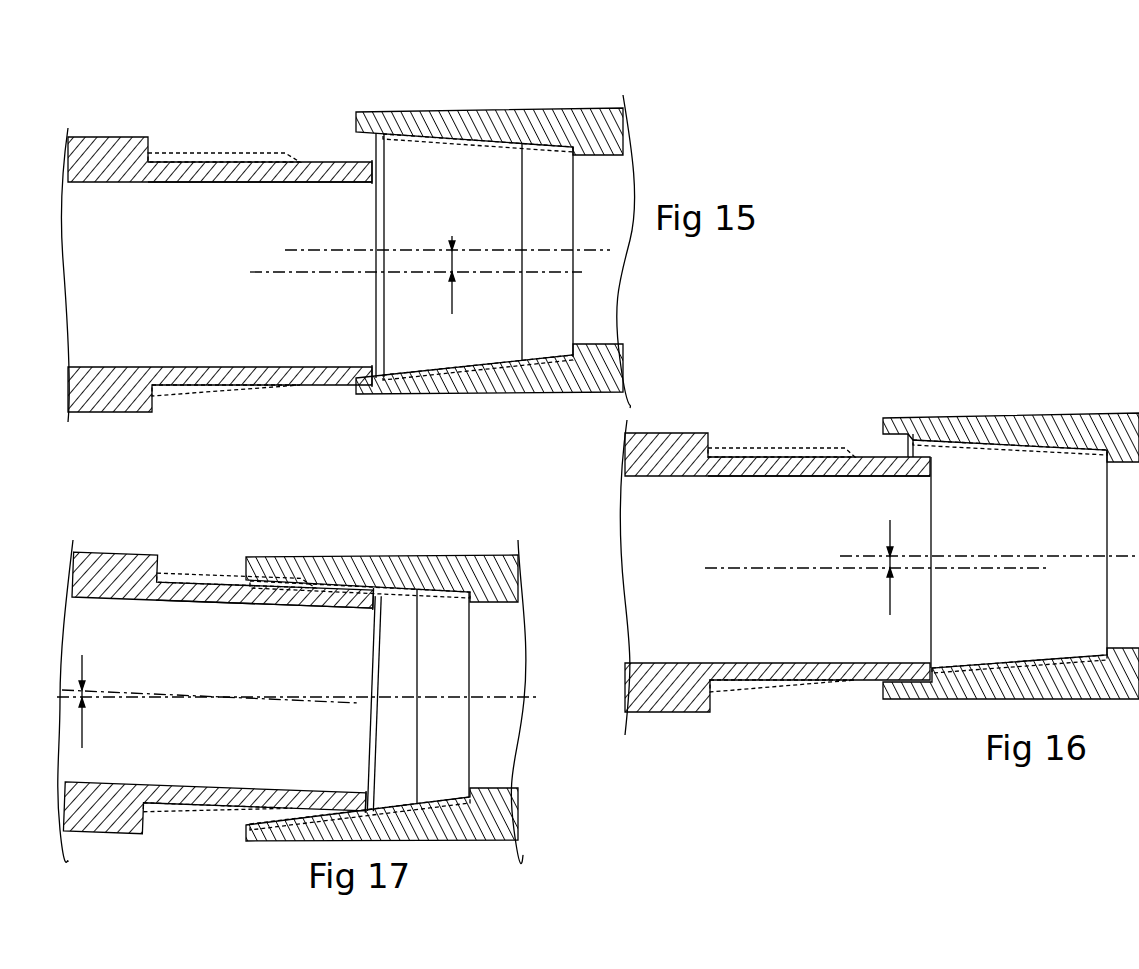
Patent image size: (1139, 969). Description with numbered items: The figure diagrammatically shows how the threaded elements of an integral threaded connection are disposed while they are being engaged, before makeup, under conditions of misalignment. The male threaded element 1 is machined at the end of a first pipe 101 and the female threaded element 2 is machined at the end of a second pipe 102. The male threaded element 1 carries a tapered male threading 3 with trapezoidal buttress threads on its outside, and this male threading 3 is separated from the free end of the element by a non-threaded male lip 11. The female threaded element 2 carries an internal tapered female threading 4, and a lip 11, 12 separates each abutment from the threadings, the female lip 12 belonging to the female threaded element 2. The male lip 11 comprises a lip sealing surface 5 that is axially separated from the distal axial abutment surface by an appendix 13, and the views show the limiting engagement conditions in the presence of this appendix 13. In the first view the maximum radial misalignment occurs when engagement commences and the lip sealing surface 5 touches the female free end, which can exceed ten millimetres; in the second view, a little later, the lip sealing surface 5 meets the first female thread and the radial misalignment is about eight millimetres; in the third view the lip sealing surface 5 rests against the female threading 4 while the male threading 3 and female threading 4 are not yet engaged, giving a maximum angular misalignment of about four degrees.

In FIG. 15, the male threaded element 1 is at (406, 189).
In FIG. 16, the male threaded element 1 is at (922, 486).
In FIG. 17, the male threaded element 1 is at (298, 614).
In FIG. 15, the female threaded element 2 is at (518, 252).
In FIG. 16, the female threaded element 2 is at (1049, 552).
In FIG. 17, the female threaded element 2 is at (434, 696).
In FIG. 16, the male threading 3 is at (782, 692).
In FIG. 17, the male threading 3 is at (233, 578).
In FIG. 16, the female threading 4 is at (950, 684).
In FIG. 17, the female threading 4 is at (372, 587).
In FIG. 15, the lip sealing surface 5 is at (374, 147).
In FIG. 16, the lip sealing surface 5 is at (927, 452).
In FIG. 17, the lip sealing surface 5 is at (383, 596).
In FIG. 15, the male lip 11 is at (332, 183).
In FIG. 16, the male lip 11 is at (870, 478).
In FIG. 17, the male lip 11 is at (340, 610).
In FIG. 15, the female lip 12 is at (362, 393).
In FIG. 15, the appendix 13 is at (366, 183).
In FIG. 16, the appendix 13 is at (928, 478).
In FIG. 17, the appendix 13 is at (372, 615).
In FIG. 15, the first pipe 101 is at (105, 183).
In FIG. 16, the first pipe 101 is at (655, 714).
In FIG. 17, the first pipe 101 is at (100, 552).
In FIG. 15, the second pipe 102 is at (575, 110).
In FIG. 16, the second pipe 102 is at (1107, 416).
In FIG. 17, the second pipe 102 is at (472, 556).